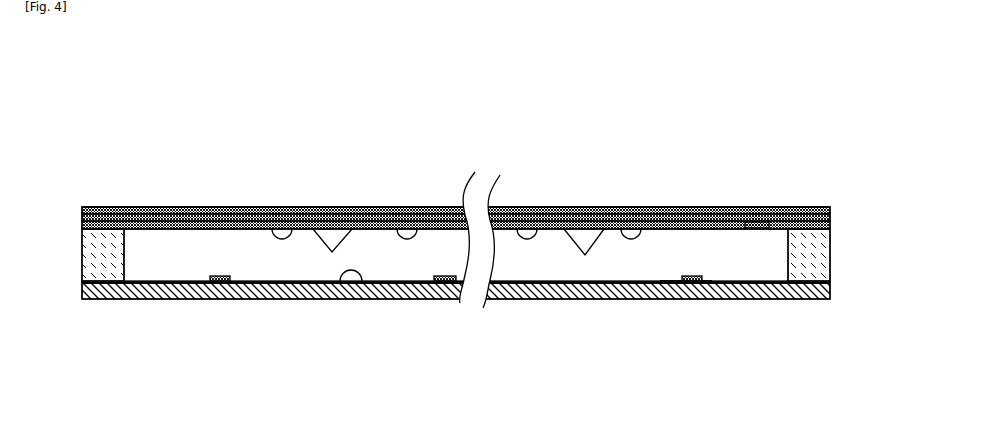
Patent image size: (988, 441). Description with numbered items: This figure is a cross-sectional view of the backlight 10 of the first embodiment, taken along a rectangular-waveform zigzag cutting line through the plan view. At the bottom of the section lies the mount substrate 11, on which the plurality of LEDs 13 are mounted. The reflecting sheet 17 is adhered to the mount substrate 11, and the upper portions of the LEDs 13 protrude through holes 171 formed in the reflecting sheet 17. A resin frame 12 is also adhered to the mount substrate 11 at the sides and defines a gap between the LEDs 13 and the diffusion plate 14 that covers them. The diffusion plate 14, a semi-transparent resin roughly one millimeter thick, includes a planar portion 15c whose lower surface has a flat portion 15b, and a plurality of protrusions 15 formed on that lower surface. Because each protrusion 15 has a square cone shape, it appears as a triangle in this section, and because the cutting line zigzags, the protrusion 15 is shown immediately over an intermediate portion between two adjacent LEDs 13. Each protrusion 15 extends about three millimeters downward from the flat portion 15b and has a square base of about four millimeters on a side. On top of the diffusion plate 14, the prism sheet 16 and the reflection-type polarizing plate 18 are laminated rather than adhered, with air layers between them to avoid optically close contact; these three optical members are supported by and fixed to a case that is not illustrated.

The backlight 10 is at (186, 182).
The mount substrate 11 is at (273, 300).
The resin frame 12 is at (830, 265).
The LED 13 is at (220, 284).
The diffusion plate 14 is at (830, 220).
The protrusion 15 is at (337, 230).
The flat portion 15b is at (273, 230).
The planar portion 15c is at (757, 223).
The prism sheet 16 is at (830, 213).
The reflecting sheet 17 is at (348, 279).
The hole 171 is at (679, 276).
The reflection-type polarizing plate 18 is at (247, 208).